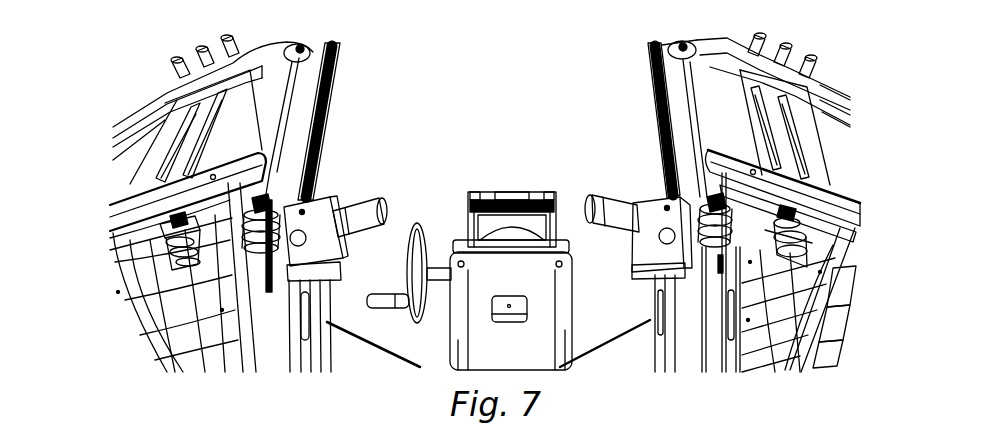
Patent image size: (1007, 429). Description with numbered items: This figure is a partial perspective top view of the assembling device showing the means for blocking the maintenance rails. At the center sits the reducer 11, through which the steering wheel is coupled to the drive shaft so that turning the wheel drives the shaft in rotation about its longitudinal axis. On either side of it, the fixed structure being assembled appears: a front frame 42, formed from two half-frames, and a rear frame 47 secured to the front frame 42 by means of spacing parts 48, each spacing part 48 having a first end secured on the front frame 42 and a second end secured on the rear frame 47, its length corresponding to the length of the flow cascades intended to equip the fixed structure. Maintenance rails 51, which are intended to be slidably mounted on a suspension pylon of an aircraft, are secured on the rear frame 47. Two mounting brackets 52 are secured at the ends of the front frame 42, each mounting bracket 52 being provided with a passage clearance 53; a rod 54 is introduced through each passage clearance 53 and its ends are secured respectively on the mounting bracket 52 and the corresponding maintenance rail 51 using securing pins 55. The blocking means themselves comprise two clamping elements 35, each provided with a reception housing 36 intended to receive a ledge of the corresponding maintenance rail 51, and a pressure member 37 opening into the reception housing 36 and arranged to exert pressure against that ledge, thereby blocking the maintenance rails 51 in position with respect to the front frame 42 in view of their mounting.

The reducer 11 is at (496, 192).
The clamping element 35 is at (310, 210).
The reception housing 36 is at (295, 307).
The pressure member 37 is at (373, 197).
The front frame 42 is at (832, 282).
The rear frame 47 is at (827, 90).
The spacing part 48 is at (173, 103).
The maintenance rail 51 is at (302, 90).
The mounting bracket 52 is at (167, 243).
The passage clearance 53 is at (270, 285).
The rod 54 is at (730, 192).
The securing pin 55 is at (263, 167).